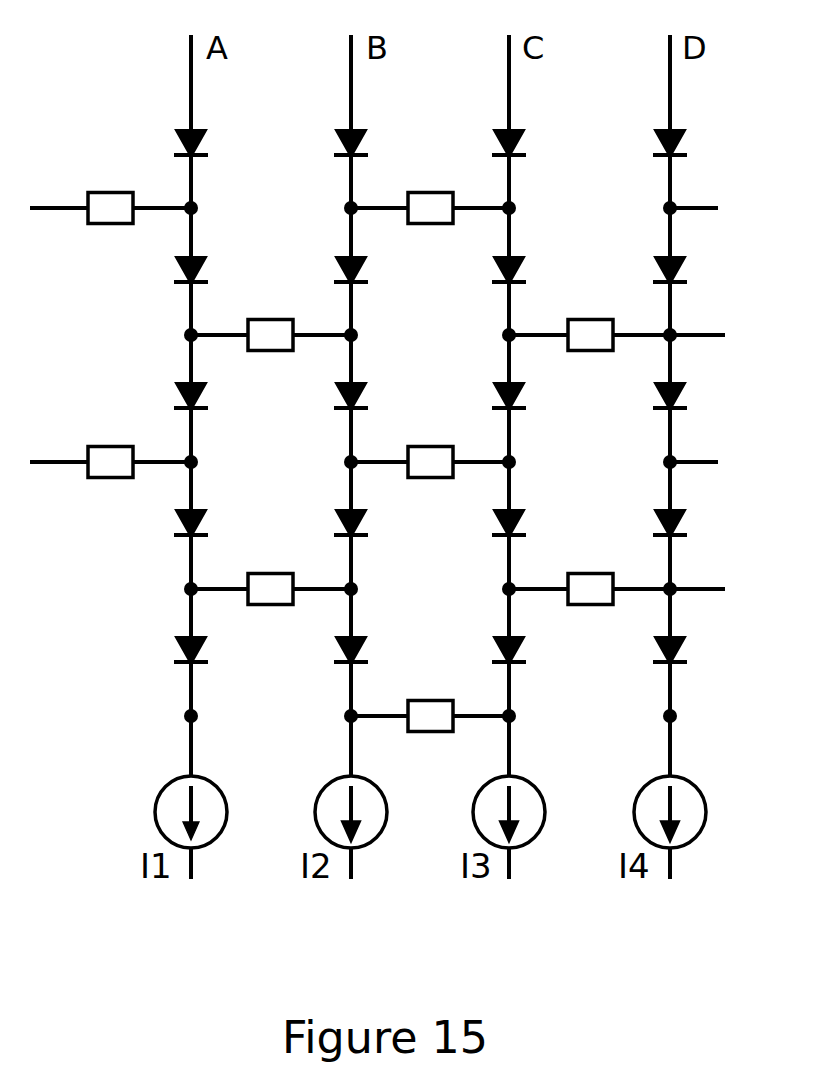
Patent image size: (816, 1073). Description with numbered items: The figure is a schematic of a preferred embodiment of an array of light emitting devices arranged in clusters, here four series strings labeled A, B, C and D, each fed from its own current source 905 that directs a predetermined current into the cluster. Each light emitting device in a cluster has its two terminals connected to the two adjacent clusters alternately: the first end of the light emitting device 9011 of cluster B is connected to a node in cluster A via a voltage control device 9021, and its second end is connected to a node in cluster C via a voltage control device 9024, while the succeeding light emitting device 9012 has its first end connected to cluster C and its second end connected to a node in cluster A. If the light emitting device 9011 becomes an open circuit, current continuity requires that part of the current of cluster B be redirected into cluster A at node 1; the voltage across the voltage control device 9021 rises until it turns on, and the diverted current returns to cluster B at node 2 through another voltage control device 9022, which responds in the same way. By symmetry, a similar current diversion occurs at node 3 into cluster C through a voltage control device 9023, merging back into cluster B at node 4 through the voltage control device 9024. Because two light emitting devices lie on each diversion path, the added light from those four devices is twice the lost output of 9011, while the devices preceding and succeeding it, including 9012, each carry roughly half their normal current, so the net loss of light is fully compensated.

The current source 905 is at (148, 793).
The voltage control device 9021 is at (284, 288).
The voltage control device 9022 is at (275, 607).
The voltage control device 9023 is at (432, 228).
The voltage control device 9024 is at (435, 480).
The light emitting device 9011 is at (332, 397).
The light emitting device 9012 is at (334, 522).
The node 1 is at (369, 333).
The node 2 is at (369, 588).
The node 3 is at (336, 208).
The node 4 is at (338, 468).